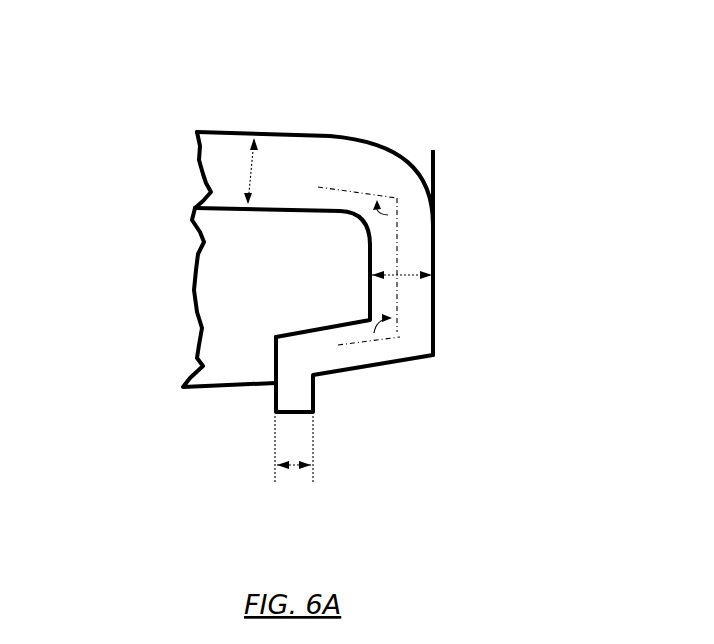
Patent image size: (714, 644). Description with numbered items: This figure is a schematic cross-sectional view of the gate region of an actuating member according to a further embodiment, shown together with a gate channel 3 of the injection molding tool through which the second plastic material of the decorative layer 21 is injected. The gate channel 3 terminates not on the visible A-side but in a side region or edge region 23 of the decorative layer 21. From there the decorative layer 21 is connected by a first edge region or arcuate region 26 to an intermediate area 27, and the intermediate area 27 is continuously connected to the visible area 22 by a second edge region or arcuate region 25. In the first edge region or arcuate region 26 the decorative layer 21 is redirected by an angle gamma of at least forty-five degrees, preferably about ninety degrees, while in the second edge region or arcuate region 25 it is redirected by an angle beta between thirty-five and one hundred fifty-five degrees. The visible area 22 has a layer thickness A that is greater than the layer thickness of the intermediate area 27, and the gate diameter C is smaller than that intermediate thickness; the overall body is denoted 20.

The gate channel 3 is at (313, 410).
The panel body 20 is at (258, 330).
The decorative layer 21 is at (402, 188).
The visible area 22 is at (300, 133).
The side region or edge region 23 is at (437, 258).
The second edge region or arcuate region 25 is at (427, 113).
The first edge region or arcuate region 26 is at (488, 342).
The intermediate area 27 is at (293, 175).